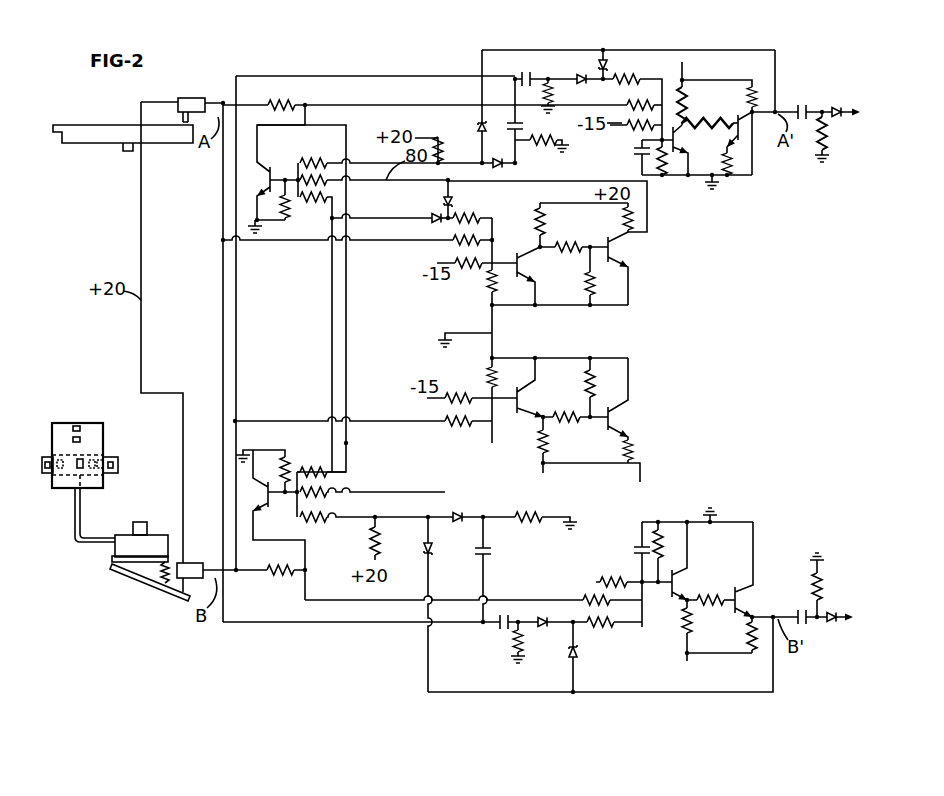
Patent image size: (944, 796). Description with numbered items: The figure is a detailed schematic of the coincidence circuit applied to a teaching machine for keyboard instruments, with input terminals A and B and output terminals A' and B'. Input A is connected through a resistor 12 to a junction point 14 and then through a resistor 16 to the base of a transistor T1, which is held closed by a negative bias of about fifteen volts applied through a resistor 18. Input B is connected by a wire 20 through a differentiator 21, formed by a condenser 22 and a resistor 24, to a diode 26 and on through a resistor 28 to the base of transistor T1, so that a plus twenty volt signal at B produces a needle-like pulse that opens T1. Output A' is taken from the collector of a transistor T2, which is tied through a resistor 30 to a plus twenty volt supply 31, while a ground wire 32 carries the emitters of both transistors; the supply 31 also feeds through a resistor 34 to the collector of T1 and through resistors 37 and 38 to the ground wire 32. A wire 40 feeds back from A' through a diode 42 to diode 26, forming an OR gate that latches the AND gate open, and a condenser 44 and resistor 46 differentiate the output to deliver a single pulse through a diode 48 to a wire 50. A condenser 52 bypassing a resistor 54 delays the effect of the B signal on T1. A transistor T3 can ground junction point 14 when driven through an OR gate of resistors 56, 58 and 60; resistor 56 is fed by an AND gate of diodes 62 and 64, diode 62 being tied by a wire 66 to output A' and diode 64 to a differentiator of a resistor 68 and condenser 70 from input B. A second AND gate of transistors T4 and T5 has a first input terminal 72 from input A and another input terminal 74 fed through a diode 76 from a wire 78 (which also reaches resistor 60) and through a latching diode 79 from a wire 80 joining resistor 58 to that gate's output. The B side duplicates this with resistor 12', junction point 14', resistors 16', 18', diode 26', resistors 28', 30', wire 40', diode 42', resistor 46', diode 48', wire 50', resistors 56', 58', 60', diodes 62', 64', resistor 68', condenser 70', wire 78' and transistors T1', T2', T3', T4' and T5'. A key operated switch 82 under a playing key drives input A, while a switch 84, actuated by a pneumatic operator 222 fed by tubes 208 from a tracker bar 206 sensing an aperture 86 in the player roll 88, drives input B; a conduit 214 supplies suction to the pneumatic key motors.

The resistor 12 is at (274, 81).
The junction point 14 is at (466, 80).
The resistor 16 is at (629, 98).
The resistor 18 is at (626, 137).
The wire 20 is at (237, 337).
The differentiator 21 is at (524, 56).
The condenser 22 is at (628, 62).
The resistor 24 is at (556, 71).
The diode 26 is at (562, 96).
The resistor 28 is at (632, 100).
The resistor 30 is at (719, 97).
The plus 20 voltage supply 31 is at (685, 88).
The ground wire 32 is at (748, 178).
The resistor 34 is at (689, 122).
The resistor 37 is at (722, 131).
The resistor 38 is at (728, 174).
The wire 40 is at (784, 82).
The diode 42 is at (577, 66).
The condenser 44 is at (801, 104).
The resistor 46 is at (815, 153).
The diode 48 is at (841, 94).
The wire 50 is at (849, 133).
The condenser 52 is at (629, 150).
The resistor 54 is at (665, 171).
The resistor 56 is at (358, 166).
The resistor 58 is at (372, 159).
The resistor 60 is at (314, 212).
The diode 62 is at (463, 124).
The diode 64 is at (479, 183).
The wire 66 is at (481, 93).
The resistor 68 is at (542, 156).
The condenser 70 is at (531, 121).
The first input terminal 72 is at (370, 242).
The other input terminal 74 is at (453, 214).
The diode 76 is at (432, 222).
The wire 78 is at (362, 331).
The diode 79 is at (443, 200).
The wire 80 is at (108, 126).
The key operated switch 82 is at (196, 95).
The switch 84 is at (193, 563).
The aperture 86 is at (80, 463).
The player roll 88 is at (95, 425).
The tracker bar 206 is at (118, 465).
The tubes 208 is at (75, 546).
The conduit 214 is at (133, 526).
The pneumatic operators 222 is at (143, 572).
The resistor 12' is at (270, 585).
The junction point 14' is at (324, 573).
The resistor 16' is at (473, 592).
The resistor 18' is at (602, 558).
The diode 26' is at (535, 646).
The resistor 28' is at (607, 636).
The resistor 30' is at (725, 649).
The wire 40' is at (600, 669).
The diode 42' is at (595, 657).
The resistor 46' is at (828, 571).
The diode 48' is at (835, 597).
The wire 50' is at (837, 643).
The resistor 56' is at (338, 525).
The resistor 58' is at (372, 481).
The resistor 60' is at (318, 471).
The diode 62' is at (412, 603).
The diode 64' is at (462, 504).
The resistor 68' is at (530, 509).
The condenser 70' is at (504, 569).
The wire 78' is at (324, 298).
The transistor T1 is at (691, 173).
The transistor T2 is at (755, 143).
The transistor T3 is at (248, 169).
The transistor T4 is at (543, 292).
The transistor T5 is at (572, 243).
The transistor T1' is at (695, 602).
The transistor T2' is at (762, 571).
The transistor T3' is at (246, 511).
The transistor T4' is at (551, 421).
The transistor T5' is at (614, 420).